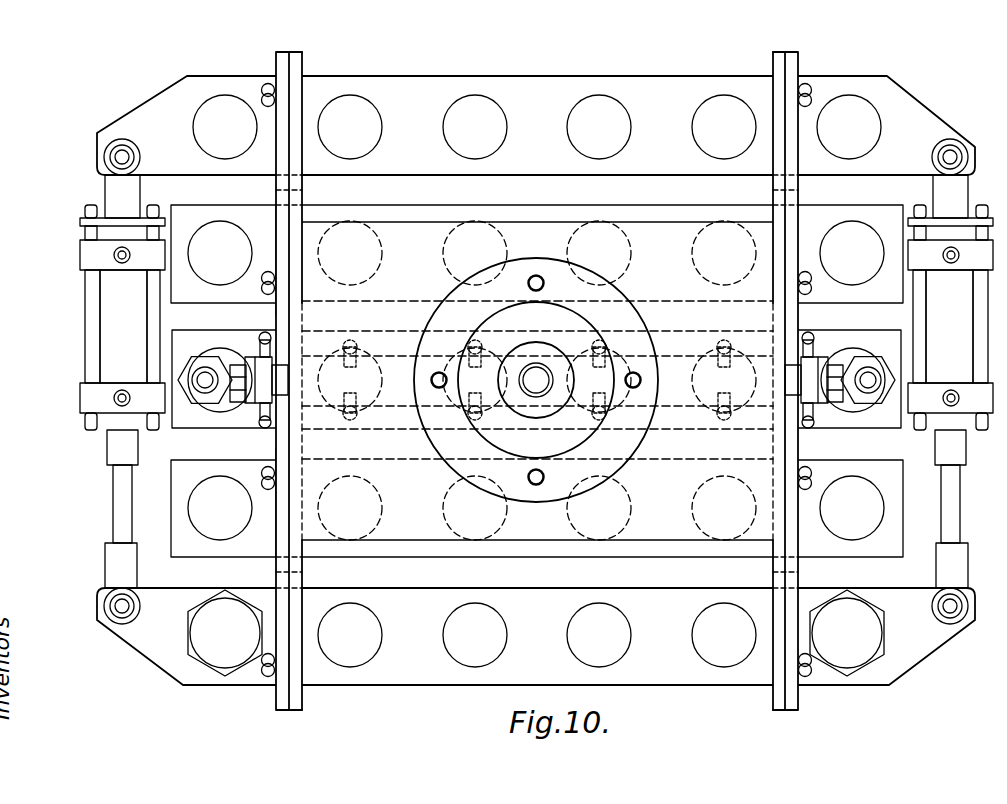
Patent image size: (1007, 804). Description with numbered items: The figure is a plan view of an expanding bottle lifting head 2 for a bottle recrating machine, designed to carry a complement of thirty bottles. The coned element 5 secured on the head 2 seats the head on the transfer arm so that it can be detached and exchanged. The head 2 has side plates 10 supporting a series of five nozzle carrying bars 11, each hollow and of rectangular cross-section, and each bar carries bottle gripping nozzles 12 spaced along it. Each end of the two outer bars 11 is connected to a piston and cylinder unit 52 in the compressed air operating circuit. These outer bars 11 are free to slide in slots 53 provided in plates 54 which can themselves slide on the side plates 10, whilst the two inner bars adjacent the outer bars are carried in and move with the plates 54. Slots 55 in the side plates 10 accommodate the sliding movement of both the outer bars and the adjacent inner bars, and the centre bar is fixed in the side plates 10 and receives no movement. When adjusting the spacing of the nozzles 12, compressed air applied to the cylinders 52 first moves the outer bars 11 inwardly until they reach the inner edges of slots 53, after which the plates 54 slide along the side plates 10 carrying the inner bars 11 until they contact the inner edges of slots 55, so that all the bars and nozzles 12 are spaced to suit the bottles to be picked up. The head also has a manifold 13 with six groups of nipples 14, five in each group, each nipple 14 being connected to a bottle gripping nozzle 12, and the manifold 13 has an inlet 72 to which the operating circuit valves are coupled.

The bottle lifting head 2 is at (542, 232).
The coned element 5 is at (568, 322).
The side plates 10 is at (297, 67).
The hollow bars 11 is at (472, 83).
The bottle gripping nozzles 12 is at (857, 113).
The manifold 13 is at (418, 362).
The nipples 14 is at (722, 350).
The piston and cylinder unit 52 is at (107, 342).
The slots 53 is at (283, 183).
The sliding plates 54 is at (283, 63).
The slots 55 is at (290, 323).
The inlet 72 is at (200, 373).